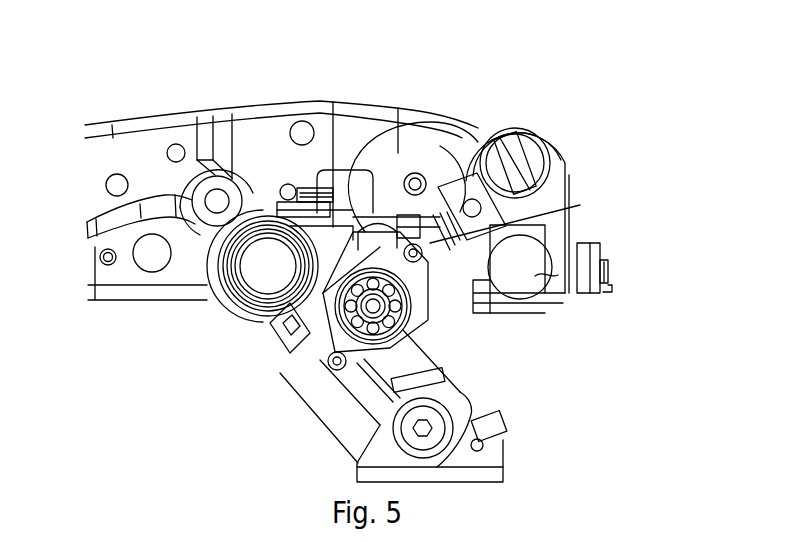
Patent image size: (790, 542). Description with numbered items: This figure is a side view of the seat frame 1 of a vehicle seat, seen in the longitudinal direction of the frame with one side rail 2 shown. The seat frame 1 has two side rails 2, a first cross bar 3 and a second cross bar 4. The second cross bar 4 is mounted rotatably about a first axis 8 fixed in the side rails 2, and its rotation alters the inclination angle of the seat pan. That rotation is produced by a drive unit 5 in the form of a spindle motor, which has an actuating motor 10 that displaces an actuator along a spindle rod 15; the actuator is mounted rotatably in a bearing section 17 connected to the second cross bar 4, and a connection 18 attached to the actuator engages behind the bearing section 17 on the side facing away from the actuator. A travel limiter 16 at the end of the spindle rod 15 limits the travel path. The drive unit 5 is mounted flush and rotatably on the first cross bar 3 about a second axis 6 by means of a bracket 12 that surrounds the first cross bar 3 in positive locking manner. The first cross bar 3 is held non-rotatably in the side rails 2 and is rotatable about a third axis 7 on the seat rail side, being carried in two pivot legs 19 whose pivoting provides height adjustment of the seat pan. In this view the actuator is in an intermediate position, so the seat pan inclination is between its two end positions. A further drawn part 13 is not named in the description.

The seat frame 1 is at (113, 82).
The side rails 2 is at (352, 122).
The first cross bar 3 is at (213, 252).
The second cross bar 4 is at (523, 138).
The drive unit 5 is at (450, 316).
The second axis 6 is at (270, 264).
The third axis 7 is at (425, 427).
The first axis 8 is at (416, 176).
The actuating motor 10 is at (318, 352).
The bracket 12 is at (272, 212).
The connecting rod 13 is at (370, 404).
The spindle rod 15 is at (495, 285).
The travel limiter 16 is at (562, 211).
The bearing section 17 is at (551, 188).
The connection 18 is at (603, 292).
The pivot legs 19 is at (474, 137).